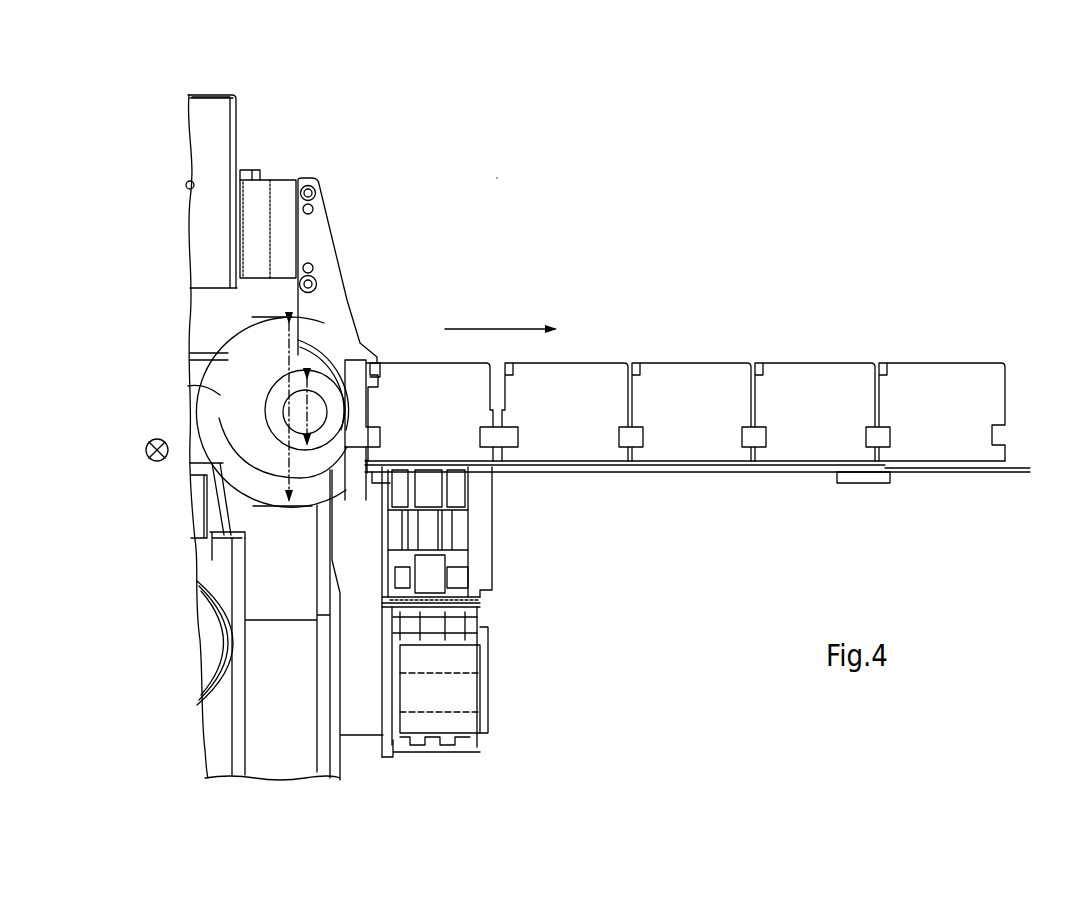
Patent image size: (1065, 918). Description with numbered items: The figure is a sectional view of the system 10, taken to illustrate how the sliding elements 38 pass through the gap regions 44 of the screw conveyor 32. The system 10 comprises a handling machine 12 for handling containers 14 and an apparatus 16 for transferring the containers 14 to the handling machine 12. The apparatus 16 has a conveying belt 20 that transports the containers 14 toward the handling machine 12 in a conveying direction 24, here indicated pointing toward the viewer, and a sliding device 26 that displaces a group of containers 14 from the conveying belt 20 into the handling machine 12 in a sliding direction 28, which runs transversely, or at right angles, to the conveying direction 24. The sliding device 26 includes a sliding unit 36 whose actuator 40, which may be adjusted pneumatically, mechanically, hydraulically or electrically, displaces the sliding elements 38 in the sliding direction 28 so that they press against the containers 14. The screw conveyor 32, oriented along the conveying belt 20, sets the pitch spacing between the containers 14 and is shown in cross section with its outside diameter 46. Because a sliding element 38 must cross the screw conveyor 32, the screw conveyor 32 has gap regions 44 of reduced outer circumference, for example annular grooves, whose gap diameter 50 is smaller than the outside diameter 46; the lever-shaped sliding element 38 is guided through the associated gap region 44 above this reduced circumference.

The system 10 is at (497, 177).
The handling machine 12 is at (745, 290).
The containers 14 is at (722, 487).
The apparatus 16 is at (170, 168).
The conveying belt 20 is at (500, 524).
The conveying direction 24 is at (147, 458).
The sliding device 26 is at (280, 136).
The sliding direction 28 is at (487, 327).
The screw conveyor 32 is at (188, 386).
The sliding unit 36 is at (298, 165).
The sliding elements 38 is at (320, 250).
The actuator 40 is at (202, 118).
The gap regions 44 is at (228, 358).
The outside diameter 46 is at (260, 370).
The gap diameter 50 is at (313, 432).